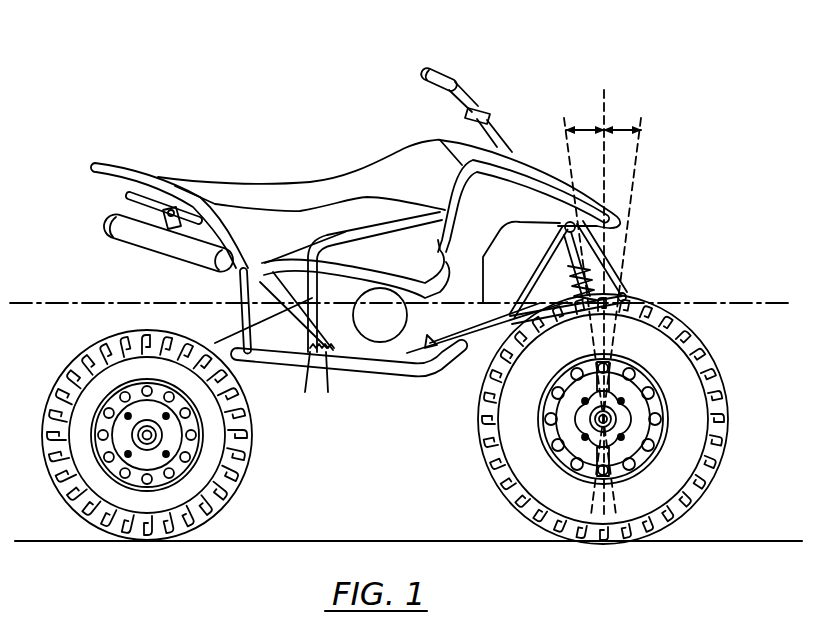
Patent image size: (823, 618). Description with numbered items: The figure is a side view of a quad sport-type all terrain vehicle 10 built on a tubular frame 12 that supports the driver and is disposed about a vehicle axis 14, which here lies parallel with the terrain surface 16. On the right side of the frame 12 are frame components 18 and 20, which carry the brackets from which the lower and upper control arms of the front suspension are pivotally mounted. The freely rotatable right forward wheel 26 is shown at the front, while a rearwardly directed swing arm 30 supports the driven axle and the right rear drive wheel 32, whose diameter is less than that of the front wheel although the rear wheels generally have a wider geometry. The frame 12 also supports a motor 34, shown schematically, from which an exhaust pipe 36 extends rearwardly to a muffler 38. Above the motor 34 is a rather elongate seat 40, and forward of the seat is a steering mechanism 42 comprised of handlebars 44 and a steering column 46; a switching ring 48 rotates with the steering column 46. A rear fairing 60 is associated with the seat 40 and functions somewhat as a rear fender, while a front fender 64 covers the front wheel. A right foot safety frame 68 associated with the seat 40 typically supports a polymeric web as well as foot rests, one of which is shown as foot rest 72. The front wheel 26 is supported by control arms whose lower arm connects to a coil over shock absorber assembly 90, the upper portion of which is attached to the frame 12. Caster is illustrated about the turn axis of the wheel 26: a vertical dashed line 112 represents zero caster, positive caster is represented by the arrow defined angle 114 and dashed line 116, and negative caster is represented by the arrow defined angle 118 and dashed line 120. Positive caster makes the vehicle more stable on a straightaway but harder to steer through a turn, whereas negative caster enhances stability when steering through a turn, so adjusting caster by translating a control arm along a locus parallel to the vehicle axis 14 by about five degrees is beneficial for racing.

The all terrain vehicle 10 is at (718, 59).
The tubular frame 12 is at (460, 410).
The vehicle axis 14 is at (712, 303).
The terrain surface 16 is at (735, 541).
The frame component 18 is at (466, 362).
The frame component 20 is at (486, 330).
The right forward wheel 26 is at (730, 396).
The swing arm 30 is at (240, 350).
The right rear drive wheel 32 is at (102, 347).
The motor 34 is at (380, 340).
The exhaust pipe 36 is at (366, 268).
The muffler 38 is at (145, 248).
The seat 40 is at (293, 187).
The steering mechanism 42 is at (496, 94).
The handlebars 44 is at (460, 82).
The steering column 46 is at (496, 130).
The switching ring 48 is at (548, 277).
The rear fairing 60 is at (127, 170).
The front fender 64 is at (507, 165).
The right foot safety frame 68 is at (333, 372).
The foot rest 72 is at (322, 360).
The coil over shock absorber assembly 90 is at (582, 286).
The vertical dashed line 112 is at (605, 97).
The arrow defined angle 114 is at (585, 123).
The dashed line 116 is at (563, 122).
The arrow defined angle 118 is at (625, 125).
The dashed line 120 is at (643, 119).